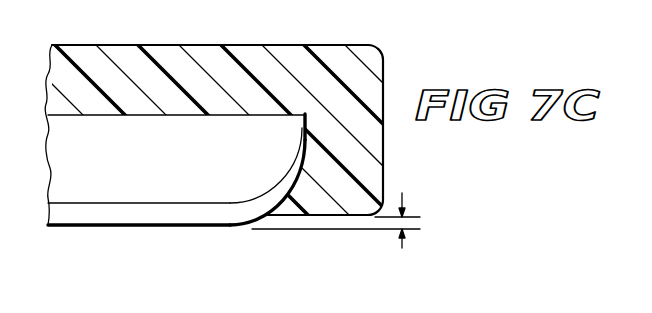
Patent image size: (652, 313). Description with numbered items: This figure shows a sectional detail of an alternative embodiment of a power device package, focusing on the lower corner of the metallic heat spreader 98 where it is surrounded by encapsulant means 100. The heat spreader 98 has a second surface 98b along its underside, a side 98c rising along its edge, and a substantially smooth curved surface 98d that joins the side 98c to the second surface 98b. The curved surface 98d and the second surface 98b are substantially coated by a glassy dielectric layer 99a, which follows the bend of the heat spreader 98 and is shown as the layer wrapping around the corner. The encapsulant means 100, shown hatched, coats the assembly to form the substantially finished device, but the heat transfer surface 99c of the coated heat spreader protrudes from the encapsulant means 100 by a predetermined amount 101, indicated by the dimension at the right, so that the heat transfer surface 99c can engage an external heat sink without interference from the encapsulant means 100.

The encapsulant means 100 is at (205, 55).
The metallic heat spreader 98 is at (173, 151).
The second surface 98b is at (140, 203).
The side 98c is at (300, 132).
The substantially smooth curved surface 98d is at (271, 189).
The glassy dielectric layer 99a is at (186, 220).
The heat transfer surface 99c is at (100, 228).
The predetermined amount 101 is at (418, 223).